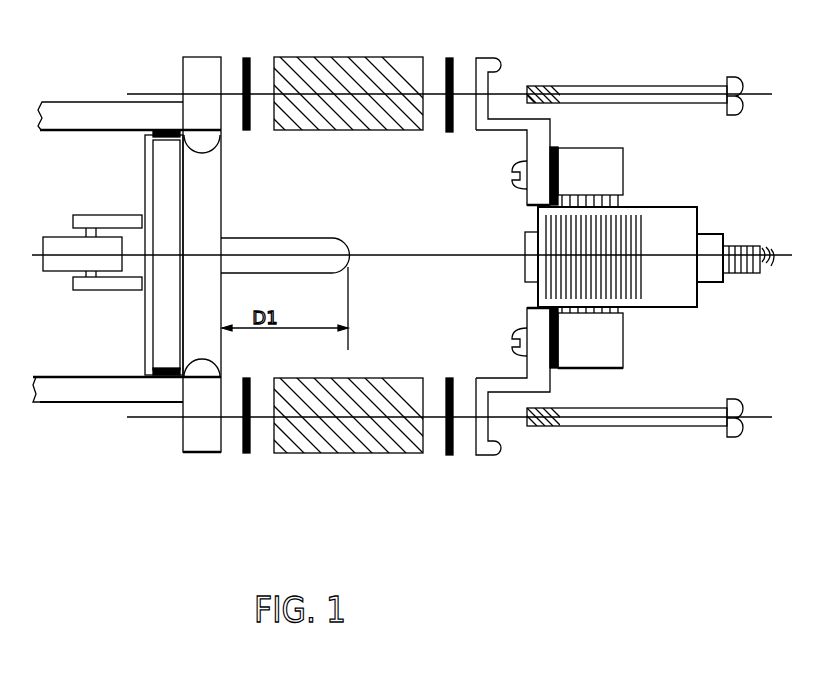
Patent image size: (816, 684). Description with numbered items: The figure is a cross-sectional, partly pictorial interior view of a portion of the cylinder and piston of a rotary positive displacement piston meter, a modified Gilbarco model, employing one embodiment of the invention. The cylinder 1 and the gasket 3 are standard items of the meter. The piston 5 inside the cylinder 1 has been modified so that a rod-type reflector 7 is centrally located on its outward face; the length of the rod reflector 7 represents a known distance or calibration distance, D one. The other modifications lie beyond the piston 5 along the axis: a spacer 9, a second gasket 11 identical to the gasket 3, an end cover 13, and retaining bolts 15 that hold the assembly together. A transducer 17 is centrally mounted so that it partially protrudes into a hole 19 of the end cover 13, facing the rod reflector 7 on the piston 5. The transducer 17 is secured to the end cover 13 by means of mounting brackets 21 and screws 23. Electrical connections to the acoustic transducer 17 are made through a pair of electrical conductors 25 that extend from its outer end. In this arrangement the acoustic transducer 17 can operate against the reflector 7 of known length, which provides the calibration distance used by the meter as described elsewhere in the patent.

The cylinder 1 is at (201, 57).
The gasket 3 is at (247, 57).
The piston 5 is at (145, 184).
The rod-type reflector 7 is at (293, 238).
The spacer 9 is at (340, 57).
The second gasket 11 is at (446, 57).
The end cover 13 is at (498, 57).
The retaining bolts 15 is at (636, 86).
The transducer 17 is at (673, 309).
The hole 19 is at (536, 307).
The mounting brackets 21 is at (623, 160).
The screws 23 is at (512, 180).
The electrical conductors 25 is at (763, 262).